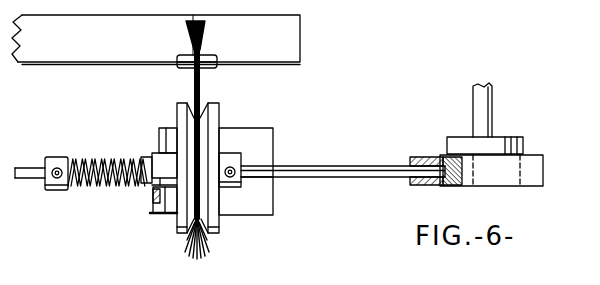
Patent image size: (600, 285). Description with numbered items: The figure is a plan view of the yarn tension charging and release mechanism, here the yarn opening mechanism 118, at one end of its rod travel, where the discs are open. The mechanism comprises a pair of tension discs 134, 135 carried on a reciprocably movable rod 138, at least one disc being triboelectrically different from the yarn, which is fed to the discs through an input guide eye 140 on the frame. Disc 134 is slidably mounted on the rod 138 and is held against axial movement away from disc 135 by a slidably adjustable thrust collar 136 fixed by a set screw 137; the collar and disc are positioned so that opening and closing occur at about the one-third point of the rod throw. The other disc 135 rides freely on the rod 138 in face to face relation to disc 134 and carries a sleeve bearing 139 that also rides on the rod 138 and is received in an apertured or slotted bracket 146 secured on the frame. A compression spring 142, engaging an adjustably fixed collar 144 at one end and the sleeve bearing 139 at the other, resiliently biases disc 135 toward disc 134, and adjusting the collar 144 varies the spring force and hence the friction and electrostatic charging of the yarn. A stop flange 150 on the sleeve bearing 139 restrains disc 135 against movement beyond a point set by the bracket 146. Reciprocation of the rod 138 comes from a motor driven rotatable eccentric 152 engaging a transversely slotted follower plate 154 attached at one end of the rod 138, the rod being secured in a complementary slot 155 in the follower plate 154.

The yarn opening mechanism 118 is at (240, 115).
The tension disc 134 is at (217, 236).
The tension disc 135 is at (185, 238).
The thrust collar 136 is at (233, 153).
The set screw 137 is at (236, 188).
The reciprocably movable rod 138 is at (344, 178).
The sleeve bearing 139 is at (167, 216).
The input guide eye 140 is at (218, 55).
The compression spring 142 is at (90, 188).
The adjustably fixed collar 144 is at (62, 190).
The bracket 146 is at (162, 127).
The stop flange 150 is at (153, 142).
The rotatable eccentric 152 is at (524, 140).
The follower plate 154 is at (545, 170).
The slot 155 is at (444, 157).